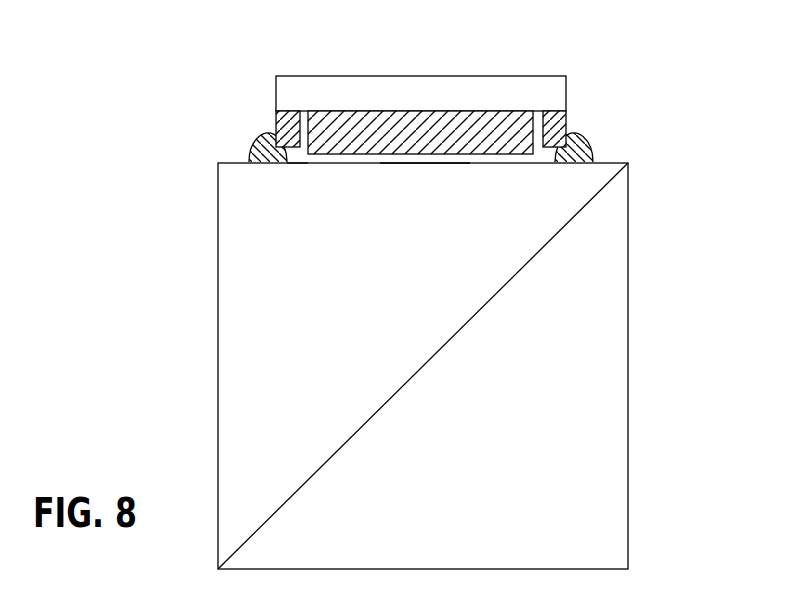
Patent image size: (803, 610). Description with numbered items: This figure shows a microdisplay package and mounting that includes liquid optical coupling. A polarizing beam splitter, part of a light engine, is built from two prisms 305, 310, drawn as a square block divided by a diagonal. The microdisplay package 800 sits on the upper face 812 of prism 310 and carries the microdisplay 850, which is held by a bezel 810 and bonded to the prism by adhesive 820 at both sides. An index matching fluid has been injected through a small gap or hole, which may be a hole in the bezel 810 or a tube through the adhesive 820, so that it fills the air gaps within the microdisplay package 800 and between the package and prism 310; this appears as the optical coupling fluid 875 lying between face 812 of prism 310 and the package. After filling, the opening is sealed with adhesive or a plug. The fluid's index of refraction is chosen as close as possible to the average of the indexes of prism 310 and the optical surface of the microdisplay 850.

The microdisplay package 800 is at (523, 66).
The bezel 810 is at (277, 123).
The face of prism 812 is at (295, 166).
The adhesive 820 is at (252, 148).
The microdisplay 850 is at (468, 153).
The optical coupling fluid 875 is at (422, 163).
The prism 310 is at (274, 468).
The prism 305 is at (569, 540).